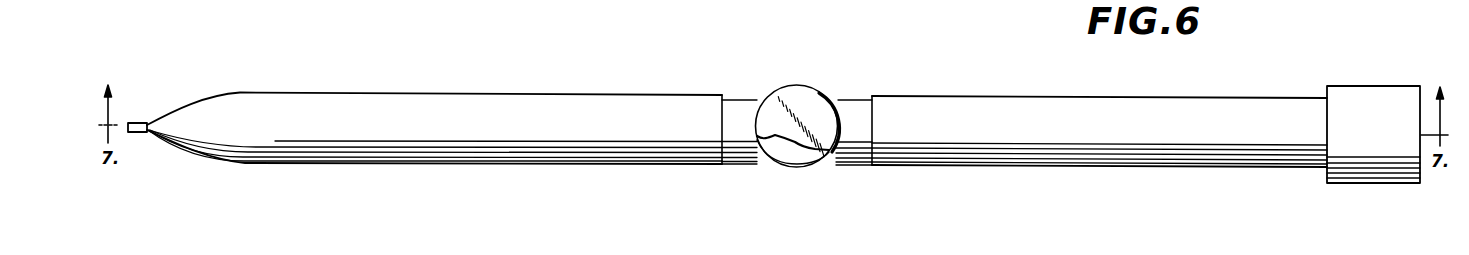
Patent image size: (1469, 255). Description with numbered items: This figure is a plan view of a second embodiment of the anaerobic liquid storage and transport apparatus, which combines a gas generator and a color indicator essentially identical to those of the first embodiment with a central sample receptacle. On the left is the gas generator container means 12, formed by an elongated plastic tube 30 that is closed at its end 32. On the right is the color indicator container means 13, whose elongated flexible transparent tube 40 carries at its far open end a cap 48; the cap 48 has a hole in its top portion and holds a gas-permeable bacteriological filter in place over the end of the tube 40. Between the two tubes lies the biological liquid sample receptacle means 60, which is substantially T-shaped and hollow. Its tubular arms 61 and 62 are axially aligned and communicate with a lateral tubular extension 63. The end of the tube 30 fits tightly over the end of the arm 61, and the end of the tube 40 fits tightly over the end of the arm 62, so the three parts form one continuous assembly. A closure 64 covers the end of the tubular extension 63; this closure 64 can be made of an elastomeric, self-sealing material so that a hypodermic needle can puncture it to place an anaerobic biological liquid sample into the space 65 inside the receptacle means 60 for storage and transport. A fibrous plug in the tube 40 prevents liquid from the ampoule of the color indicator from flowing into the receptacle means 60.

The gas generator container means 12 is at (519, 83).
The color indicator container means 13 is at (1030, 86).
The elongated plastic tube 30 is at (386, 166).
The closed end 32 is at (139, 122).
The elongated flexible transparent tube 40 is at (1134, 168).
The cap 48 is at (1376, 184).
The biological liquid sample receptacle means 60 is at (789, 114).
The tubular arm 61 is at (737, 98).
The tubular arm 62 is at (853, 97).
The lateral tubular extension 63 is at (791, 163).
The closure 64 is at (800, 103).
The space 65 is at (805, 154).